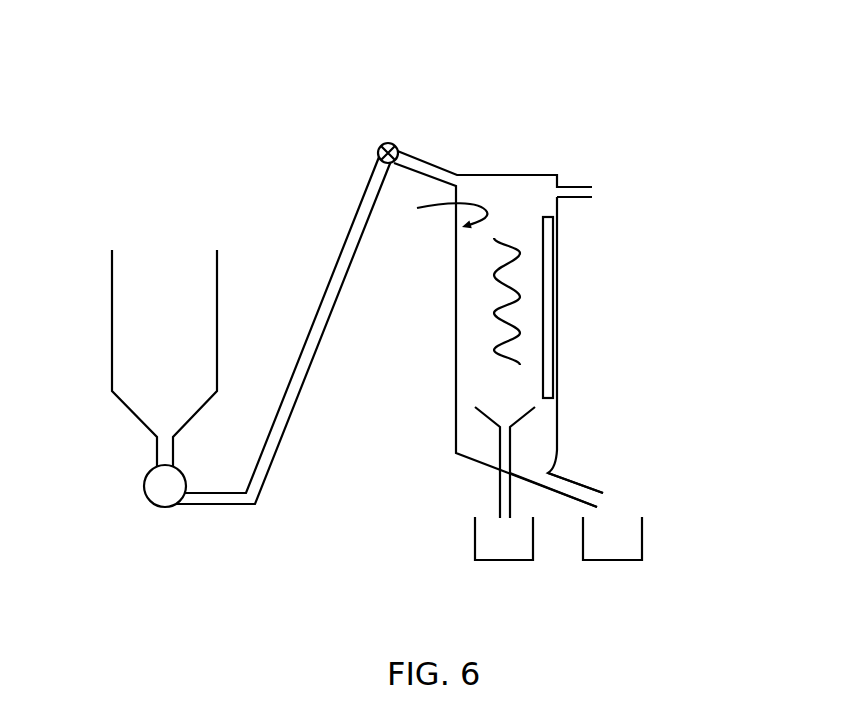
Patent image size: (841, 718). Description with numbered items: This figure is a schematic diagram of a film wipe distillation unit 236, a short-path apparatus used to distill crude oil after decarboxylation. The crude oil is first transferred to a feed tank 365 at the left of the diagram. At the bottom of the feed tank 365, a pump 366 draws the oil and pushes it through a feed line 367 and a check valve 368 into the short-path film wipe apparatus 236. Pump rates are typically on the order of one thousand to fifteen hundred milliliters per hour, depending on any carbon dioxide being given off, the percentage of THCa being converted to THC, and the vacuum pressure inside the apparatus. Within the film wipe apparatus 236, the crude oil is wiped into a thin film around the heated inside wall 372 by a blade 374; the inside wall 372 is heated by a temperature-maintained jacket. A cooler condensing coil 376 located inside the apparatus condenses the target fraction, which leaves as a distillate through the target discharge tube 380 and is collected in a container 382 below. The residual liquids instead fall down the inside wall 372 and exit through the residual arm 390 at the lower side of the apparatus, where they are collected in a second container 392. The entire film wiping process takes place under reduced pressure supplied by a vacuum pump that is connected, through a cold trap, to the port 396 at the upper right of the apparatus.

The film wipe distillation unit 236 is at (614, 68).
The feed tank 365 is at (112, 322).
The pump 366 is at (144, 487).
The feed line 367 is at (333, 272).
The check valve 368 is at (378, 153).
The inside wall 372 is at (434, 220).
The blade 374 is at (540, 216).
The condensing coil 376 is at (493, 315).
The target discharge tube 380 is at (502, 500).
The container 382 is at (475, 547).
The residual arm 390 is at (573, 480).
The container 392 is at (642, 545).
The port 396 is at (570, 187).